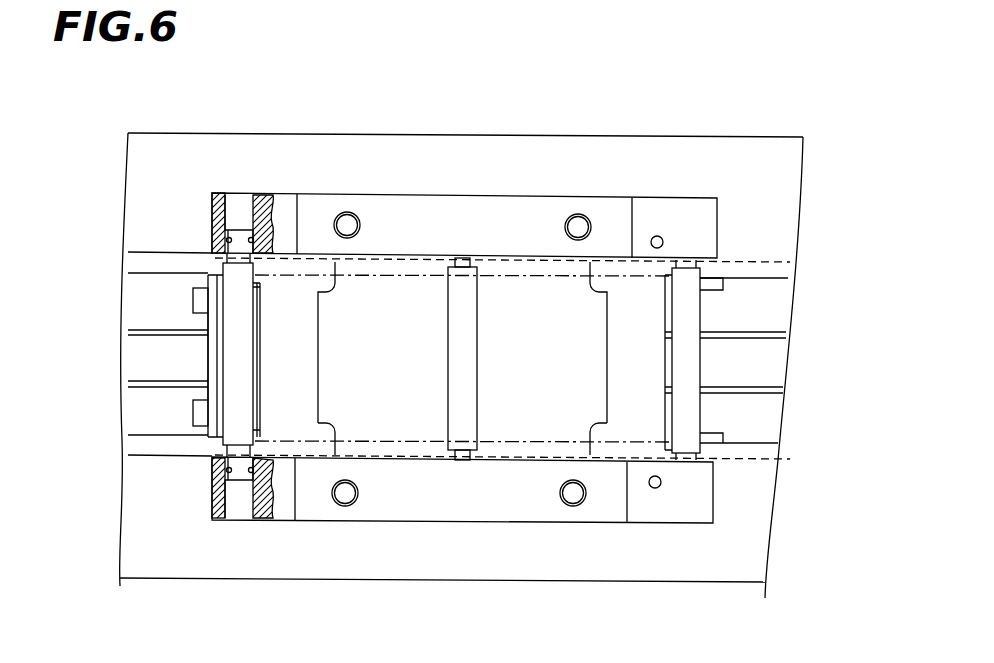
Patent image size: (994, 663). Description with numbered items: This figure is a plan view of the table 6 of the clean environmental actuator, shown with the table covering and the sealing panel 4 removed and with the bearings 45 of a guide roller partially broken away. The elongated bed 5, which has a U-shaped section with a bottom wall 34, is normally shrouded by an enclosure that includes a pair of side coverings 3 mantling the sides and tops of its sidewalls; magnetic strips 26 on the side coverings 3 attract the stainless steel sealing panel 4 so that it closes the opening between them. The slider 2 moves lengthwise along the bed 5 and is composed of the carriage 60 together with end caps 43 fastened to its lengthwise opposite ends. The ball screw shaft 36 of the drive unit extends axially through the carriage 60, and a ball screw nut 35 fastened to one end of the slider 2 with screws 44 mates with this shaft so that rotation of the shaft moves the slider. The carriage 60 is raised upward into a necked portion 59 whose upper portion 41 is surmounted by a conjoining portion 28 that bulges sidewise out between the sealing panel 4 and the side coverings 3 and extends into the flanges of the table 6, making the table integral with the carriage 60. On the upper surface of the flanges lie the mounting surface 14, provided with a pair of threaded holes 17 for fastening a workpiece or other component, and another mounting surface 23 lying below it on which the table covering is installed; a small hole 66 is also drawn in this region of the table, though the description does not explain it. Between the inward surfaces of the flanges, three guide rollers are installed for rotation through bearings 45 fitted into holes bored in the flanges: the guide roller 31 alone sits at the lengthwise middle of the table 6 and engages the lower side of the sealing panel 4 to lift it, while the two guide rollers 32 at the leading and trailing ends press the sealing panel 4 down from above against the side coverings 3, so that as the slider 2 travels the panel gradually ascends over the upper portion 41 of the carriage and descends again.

The slider 2 is at (397, 192).
The side coverings 3 is at (730, 190).
The sealing panel 4 is at (388, 300).
The bed 5 is at (138, 290).
The table 6 is at (503, 220).
The mounting surface 14 is at (470, 217).
The threaded holes 17 is at (581, 214).
The mounting surface 23 is at (290, 196).
The magnetic strips 26 is at (757, 268).
The conjoining portion 28 is at (520, 265).
The guide roller 31 is at (455, 327).
The guide rollers 32 is at (230, 195).
The bottom wall 34 is at (137, 417).
The ball screw nut 35 is at (213, 357).
The ball screw shaft 36 is at (140, 360).
The upper portion 41 is at (380, 415).
The end caps 43 is at (215, 433).
The screws 44 is at (200, 290).
The bearings 45 is at (263, 197).
The necked portion 59 is at (397, 370).
The carriage 60 is at (633, 400).
The pin hole 66 is at (657, 236).